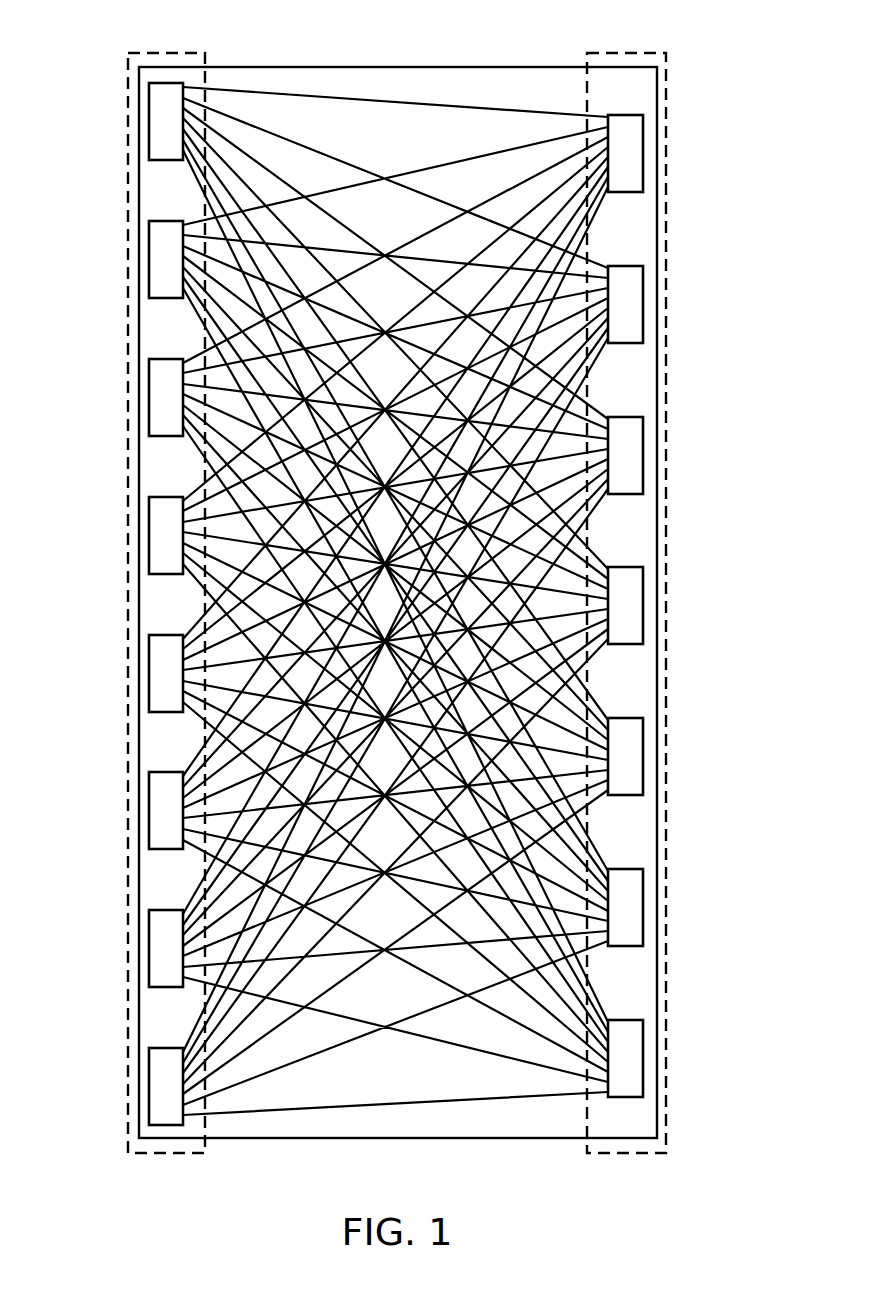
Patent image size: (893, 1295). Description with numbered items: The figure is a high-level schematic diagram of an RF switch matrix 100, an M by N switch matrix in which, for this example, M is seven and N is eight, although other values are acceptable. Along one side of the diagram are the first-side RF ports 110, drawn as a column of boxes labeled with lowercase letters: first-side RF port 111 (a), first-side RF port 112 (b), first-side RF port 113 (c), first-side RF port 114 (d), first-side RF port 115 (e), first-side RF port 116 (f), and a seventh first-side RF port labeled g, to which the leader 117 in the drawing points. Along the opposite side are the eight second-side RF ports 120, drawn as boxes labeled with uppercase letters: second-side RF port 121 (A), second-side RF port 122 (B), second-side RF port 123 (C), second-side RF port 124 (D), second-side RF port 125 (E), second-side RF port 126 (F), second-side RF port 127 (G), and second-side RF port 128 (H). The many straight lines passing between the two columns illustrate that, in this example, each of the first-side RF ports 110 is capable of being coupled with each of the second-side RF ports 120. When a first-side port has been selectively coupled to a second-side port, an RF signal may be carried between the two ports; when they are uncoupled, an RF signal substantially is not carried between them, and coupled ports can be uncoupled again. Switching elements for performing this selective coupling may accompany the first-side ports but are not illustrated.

The RF switch matrix 100 is at (400, 26).
The first-side RF ports 110 is at (657, 72).
The first-side RF port 111 is at (635, 125).
The first-side RF port 112 is at (635, 276).
The first-side RF port 113 is at (635, 427).
The first-side RF port 114 is at (635, 577).
The first-side RF port 115 is at (635, 728).
The first-side RF port 116 is at (635, 879).
The output node g 117 is at (635, 1030).
The second-side RF ports 120 is at (128, 1017).
The second-side RF port 121 is at (155, 152).
The second-side RF port 122 is at (155, 290).
The second-side RF port 123 is at (155, 428).
The second-side RF port 124 is at (155, 566).
The second-side RF port 125 is at (155, 704).
The second-side RF port 126 is at (155, 841).
The second-side RF port 127 is at (155, 979).
The second-side RF port 128 is at (155, 1117).